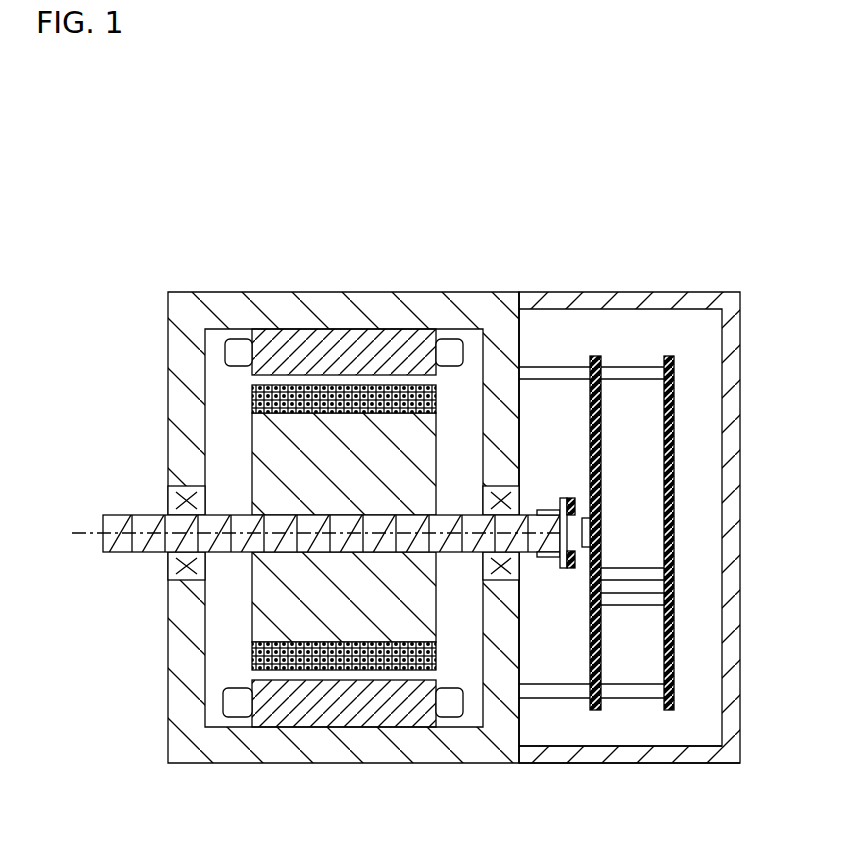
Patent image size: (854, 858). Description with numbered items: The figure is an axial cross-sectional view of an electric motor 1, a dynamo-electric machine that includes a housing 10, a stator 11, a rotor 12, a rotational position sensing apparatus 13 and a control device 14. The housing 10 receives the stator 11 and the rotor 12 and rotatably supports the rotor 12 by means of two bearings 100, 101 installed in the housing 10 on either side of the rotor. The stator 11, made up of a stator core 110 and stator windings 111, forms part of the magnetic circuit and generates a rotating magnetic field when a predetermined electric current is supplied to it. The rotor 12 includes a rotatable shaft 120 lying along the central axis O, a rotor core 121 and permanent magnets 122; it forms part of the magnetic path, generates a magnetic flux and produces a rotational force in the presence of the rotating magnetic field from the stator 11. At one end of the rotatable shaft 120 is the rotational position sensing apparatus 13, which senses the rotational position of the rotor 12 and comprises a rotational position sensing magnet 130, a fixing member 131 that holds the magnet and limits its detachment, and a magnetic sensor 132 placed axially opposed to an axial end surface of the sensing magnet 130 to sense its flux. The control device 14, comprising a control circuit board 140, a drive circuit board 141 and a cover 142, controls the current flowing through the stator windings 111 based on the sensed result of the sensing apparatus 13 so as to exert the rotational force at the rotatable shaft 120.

The electric motor 1 is at (724, 192).
The housing 10 is at (197, 300).
The bearing 101 is at (505, 490).
The stator 11 is at (449, 340).
The stator core 110 is at (373, 350).
The stator windings 111 is at (448, 352).
The rotor 12 is at (258, 443).
The rotor core 121 is at (260, 608).
The permanent magnets 122 is at (262, 398).
The bearing 100 is at (178, 503).
The rotatable shaft 120 is at (125, 540).
The central axis O is at (92, 542).
The rotational position sensing apparatus 13 is at (582, 562).
The rotational position sensing magnet 130 is at (567, 497).
The fixing member 131 is at (558, 555).
The magnetic sensor 132 is at (588, 532).
The control device 14 is at (651, 293).
The control circuit board 140 is at (596, 355).
The drive circuit board 141 is at (669, 355).
The cover 142 is at (620, 755).